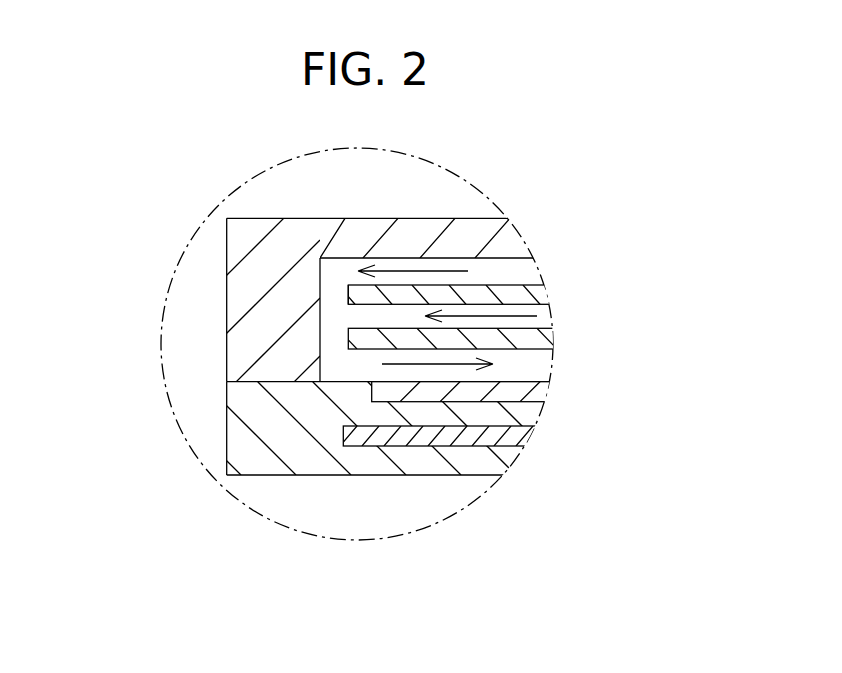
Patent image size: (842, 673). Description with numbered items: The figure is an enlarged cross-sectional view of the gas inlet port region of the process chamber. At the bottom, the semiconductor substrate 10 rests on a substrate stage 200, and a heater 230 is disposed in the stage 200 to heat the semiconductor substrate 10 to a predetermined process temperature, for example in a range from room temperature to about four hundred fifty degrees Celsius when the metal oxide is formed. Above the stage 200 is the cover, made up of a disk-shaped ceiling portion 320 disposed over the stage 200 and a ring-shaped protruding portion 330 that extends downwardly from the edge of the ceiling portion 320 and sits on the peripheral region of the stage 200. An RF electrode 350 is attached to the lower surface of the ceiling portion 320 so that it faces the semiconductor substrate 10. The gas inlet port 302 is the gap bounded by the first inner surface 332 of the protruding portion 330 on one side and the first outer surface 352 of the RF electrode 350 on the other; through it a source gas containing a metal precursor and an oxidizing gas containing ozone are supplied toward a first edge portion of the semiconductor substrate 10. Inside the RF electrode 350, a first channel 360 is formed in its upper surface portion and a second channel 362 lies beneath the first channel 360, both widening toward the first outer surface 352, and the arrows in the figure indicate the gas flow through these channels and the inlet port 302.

The semiconductor substrate 10 is at (540, 390).
The substrate stage 200 is at (296, 458).
The heater 230 is at (520, 442).
The gas inlet port 302 is at (337, 368).
The ceiling portion 320 is at (468, 233).
The protruding portion 330 is at (240, 303).
The first inner surface 332 is at (322, 362).
The RF electrode 350 is at (530, 298).
The first outer surface 352 is at (347, 290).
The first channel 360 is at (493, 281).
The second channel 362 is at (365, 308).